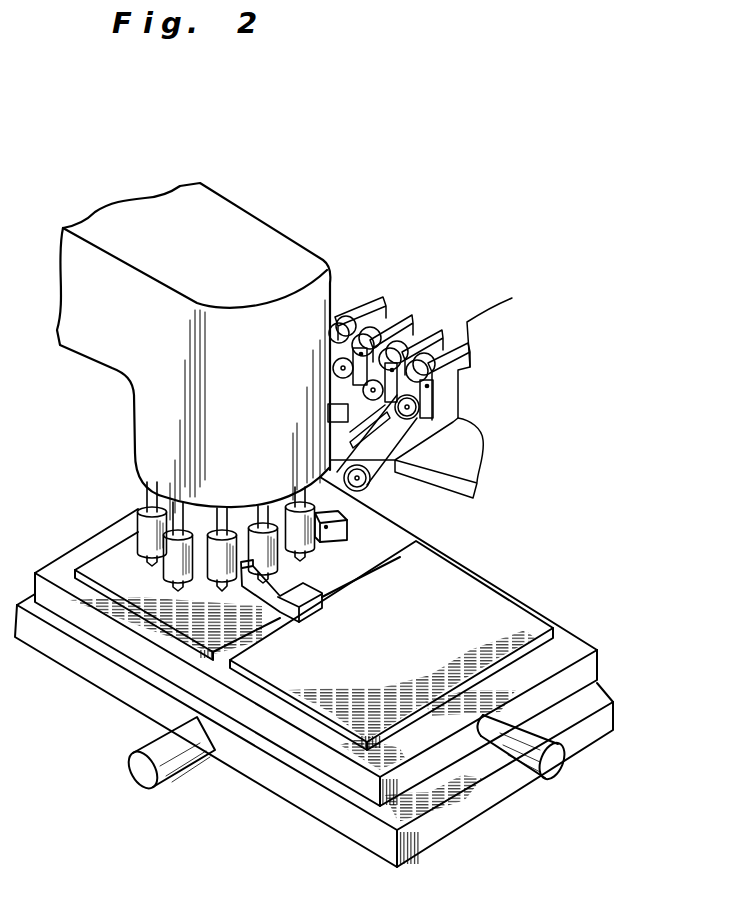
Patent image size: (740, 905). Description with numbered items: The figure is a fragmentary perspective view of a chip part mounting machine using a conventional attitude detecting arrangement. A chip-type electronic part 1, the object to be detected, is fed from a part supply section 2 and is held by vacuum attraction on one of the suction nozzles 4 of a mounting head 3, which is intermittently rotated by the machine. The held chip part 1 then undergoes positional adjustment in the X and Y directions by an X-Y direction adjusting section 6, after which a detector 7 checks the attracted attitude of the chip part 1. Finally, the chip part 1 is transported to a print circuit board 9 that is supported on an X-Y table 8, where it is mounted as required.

The chip-type electronic part 1 is at (305, 567).
The part supply section 2 is at (466, 343).
The mounting head 3 is at (278, 327).
The suction nozzle 4 is at (222, 592).
The X-Y direction adjusting section 6 is at (347, 517).
The detector 7 is at (307, 623).
The X-Y table 8 is at (410, 780).
The print circuit board 9 is at (183, 627).